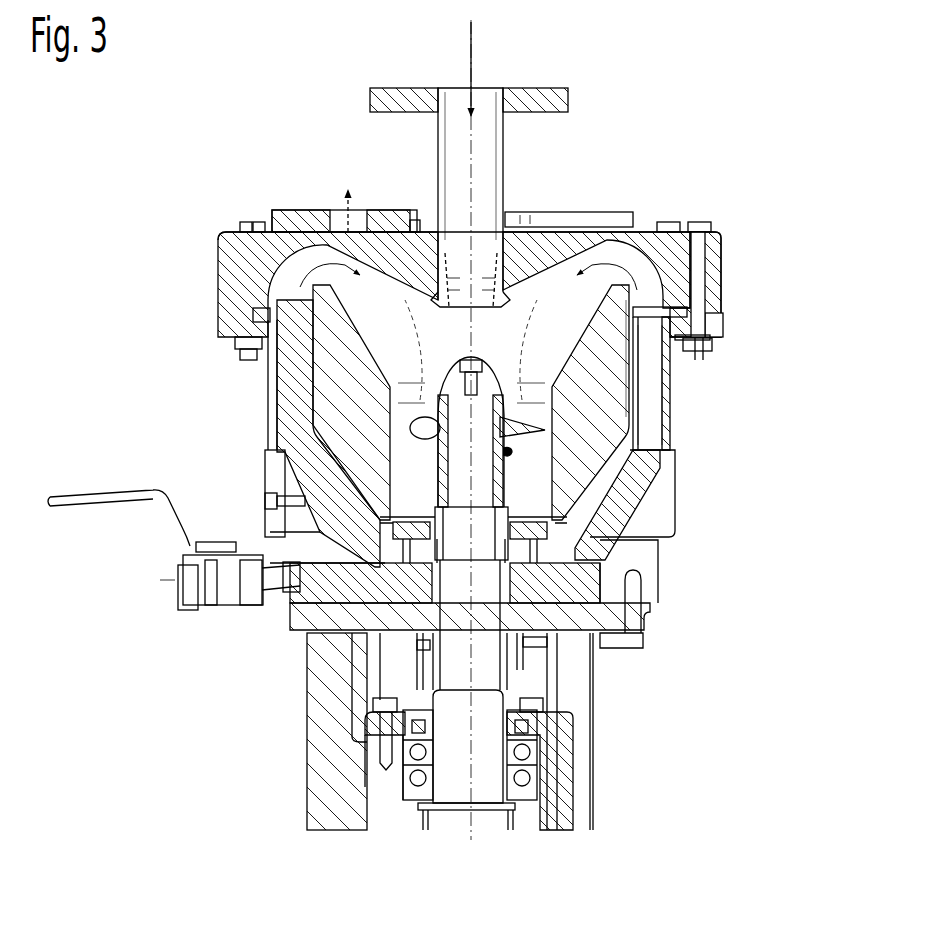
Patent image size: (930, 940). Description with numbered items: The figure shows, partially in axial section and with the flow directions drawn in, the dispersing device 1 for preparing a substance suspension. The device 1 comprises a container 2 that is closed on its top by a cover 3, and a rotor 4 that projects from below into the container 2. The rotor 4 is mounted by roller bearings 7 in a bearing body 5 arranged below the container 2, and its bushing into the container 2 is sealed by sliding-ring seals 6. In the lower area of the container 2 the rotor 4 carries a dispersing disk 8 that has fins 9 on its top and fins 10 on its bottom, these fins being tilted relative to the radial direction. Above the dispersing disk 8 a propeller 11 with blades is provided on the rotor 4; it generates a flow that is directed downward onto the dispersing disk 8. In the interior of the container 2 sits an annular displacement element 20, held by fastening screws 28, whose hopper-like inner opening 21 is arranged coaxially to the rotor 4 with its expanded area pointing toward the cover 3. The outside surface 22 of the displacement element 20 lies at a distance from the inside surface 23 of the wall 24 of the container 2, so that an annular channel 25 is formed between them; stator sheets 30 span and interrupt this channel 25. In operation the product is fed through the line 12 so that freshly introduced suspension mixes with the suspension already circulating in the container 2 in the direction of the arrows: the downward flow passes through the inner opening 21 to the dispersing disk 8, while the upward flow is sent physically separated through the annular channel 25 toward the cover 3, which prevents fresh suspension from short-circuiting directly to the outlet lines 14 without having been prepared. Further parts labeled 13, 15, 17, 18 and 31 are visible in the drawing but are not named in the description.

The device 1 is at (668, 108).
The container 2 is at (678, 515).
The cover 3 is at (725, 270).
The rotor 4 is at (508, 477).
The bearing body 5 is at (303, 722).
The sliding-ring seals 6 is at (378, 617).
The roller bearings 7 is at (398, 779).
The dispersing disk 8 is at (643, 633).
The fins 9 is at (547, 523).
The fins 10 is at (513, 560).
The propeller 11 is at (523, 420).
The line 12 is at (488, 143).
The screw 13 is at (236, 230).
The outlet lines 14 is at (345, 218).
The bolt 15 is at (712, 228).
The screw 17 is at (440, 378).
The cap 18 is at (462, 362).
The displacement element 20 is at (345, 425).
The inner opening 21 is at (537, 320).
The outside surface 22 is at (630, 410).
The inside surface 23 is at (620, 455).
The wall 24 is at (665, 402).
The annular channel 25 is at (645, 362).
The fastening screws 28 is at (262, 497).
The stator sheets 30 is at (288, 298).
The nozzle 31 is at (495, 302).